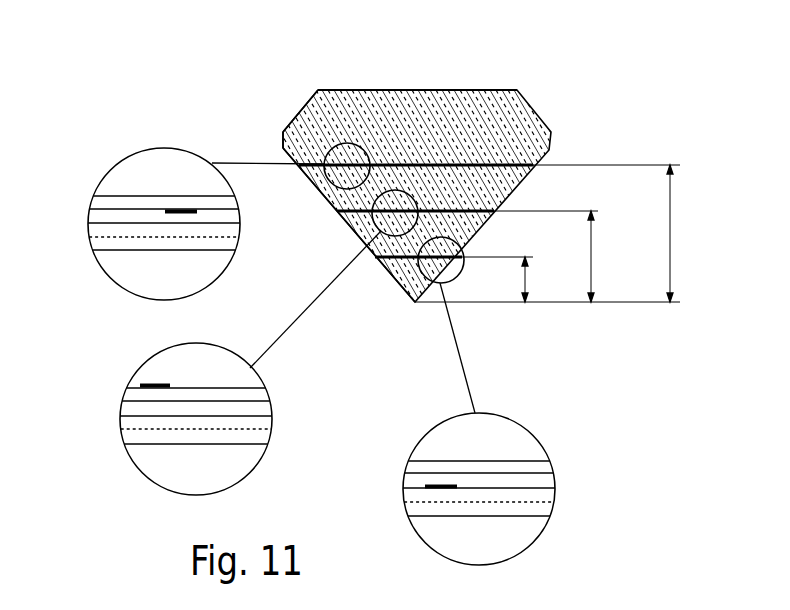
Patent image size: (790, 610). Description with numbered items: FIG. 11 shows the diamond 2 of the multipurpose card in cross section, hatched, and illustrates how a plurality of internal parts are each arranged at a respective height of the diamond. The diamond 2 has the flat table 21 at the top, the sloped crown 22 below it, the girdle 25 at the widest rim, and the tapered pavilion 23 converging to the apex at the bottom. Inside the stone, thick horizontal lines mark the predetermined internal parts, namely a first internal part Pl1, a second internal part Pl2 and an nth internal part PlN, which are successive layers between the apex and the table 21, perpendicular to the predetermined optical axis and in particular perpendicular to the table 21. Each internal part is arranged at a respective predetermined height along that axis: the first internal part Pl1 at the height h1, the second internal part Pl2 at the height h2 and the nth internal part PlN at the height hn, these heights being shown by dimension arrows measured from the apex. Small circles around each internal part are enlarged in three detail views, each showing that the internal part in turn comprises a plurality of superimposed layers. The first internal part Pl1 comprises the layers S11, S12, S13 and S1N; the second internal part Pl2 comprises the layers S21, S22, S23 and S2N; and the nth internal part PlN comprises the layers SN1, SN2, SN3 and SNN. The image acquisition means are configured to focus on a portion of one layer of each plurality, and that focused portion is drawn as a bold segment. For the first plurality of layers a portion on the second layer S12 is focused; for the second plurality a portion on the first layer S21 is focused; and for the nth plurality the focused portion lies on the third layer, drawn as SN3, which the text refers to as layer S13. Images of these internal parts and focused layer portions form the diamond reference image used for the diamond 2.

The diamond 2 is at (531, 80).
The table 21 is at (387, 90).
The crown 22 is at (298, 117).
The pavilion 23 is at (322, 195).
The girdle 25 is at (278, 141).
The first internal part Pl1 is at (500, 163).
The second internal part Pl2 is at (490, 208).
The nth internal part PlN is at (403, 253).
The predetermined height of first internal part h1 is at (682, 233).
The predetermined height of second internal part h2 is at (605, 256).
The predetermined height of nth internal part hn is at (538, 279).
The first layer of first plurality of layers S11 is at (115, 195).
The second layer of first plurality of layers S12 is at (102, 210).
The third layer S13 is at (100, 225).
The nth layer of first plurality of layers S1N is at (97, 249).
The first layer of second plurality of layers S21 is at (132, 388).
The second layer of second plurality of layers S22 is at (127, 401).
The third layer of second plurality of layers S23 is at (126, 416).
The nth layer of second plurality of layers S2N is at (132, 444).
The first layer of nth plurality of layers SN1 is at (418, 460).
The second layer of nth plurality of layers SN2 is at (412, 473).
The third layer of nth plurality of layers SN3 is at (409, 488).
The nth layer of nth plurality of layers SNN is at (415, 515).